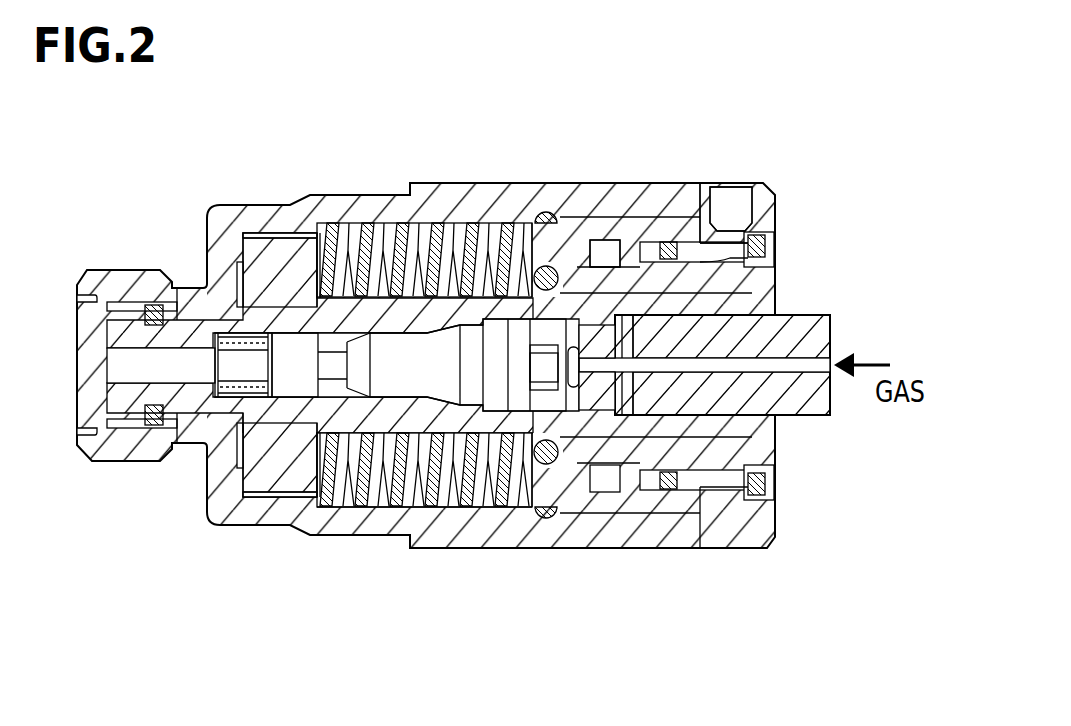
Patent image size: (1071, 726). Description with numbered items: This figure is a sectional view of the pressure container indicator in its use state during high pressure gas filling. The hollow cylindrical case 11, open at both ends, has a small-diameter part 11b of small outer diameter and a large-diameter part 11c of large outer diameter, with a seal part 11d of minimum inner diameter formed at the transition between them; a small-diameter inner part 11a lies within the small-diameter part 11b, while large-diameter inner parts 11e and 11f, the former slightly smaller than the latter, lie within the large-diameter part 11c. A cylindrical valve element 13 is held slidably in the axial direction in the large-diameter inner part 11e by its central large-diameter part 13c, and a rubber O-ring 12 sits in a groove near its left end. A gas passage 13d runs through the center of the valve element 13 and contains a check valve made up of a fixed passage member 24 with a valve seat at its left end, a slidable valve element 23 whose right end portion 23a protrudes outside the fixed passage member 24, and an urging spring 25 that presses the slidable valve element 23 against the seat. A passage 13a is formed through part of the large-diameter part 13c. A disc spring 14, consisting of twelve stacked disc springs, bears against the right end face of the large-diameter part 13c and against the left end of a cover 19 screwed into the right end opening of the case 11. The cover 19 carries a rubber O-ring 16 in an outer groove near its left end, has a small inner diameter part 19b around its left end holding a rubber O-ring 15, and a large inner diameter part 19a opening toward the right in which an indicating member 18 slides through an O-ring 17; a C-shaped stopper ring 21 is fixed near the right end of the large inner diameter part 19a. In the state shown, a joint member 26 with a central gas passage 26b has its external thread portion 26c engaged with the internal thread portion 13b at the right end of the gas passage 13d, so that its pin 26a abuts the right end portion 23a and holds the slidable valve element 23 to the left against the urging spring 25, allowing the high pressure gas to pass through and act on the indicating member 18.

The case 11 is at (125, 272).
The small-diameter inner part 11a is at (77, 308).
The small-diameter part 11b is at (110, 278).
The large-diameter part 11c is at (422, 186).
The seal part 11d is at (175, 443).
The large-diameter inner part 11e is at (252, 500).
The large-diameter inner part 11f is at (484, 510).
The O-ring 12 is at (146, 305).
The valve element 13 is at (176, 327).
The passage 13a is at (266, 272).
The internal thread portion 13b is at (698, 487).
The large-diameter part 13c is at (290, 487).
The gas passage 13d is at (112, 445).
The disc spring 14 is at (343, 222).
The O-ring 15 is at (505, 222).
The O-ring 16 is at (546, 221).
The O-ring 17 is at (668, 242).
The indicating member 18 is at (752, 284).
The cover 19 is at (774, 187).
The large inner diameter part 19a is at (750, 258).
The small inner diameter part 19b is at (588, 262).
The C-shaped stopper ring 21 is at (766, 240).
The slidable valve element 23 is at (344, 503).
The right end portion 23a is at (574, 390).
The fixed passage member 24 is at (410, 508).
The urging spring 25 is at (222, 420).
The joint member 26 is at (792, 375).
The pin 26a is at (605, 412).
The gas passage 26b is at (792, 408).
The external thread portion 26c is at (815, 328).